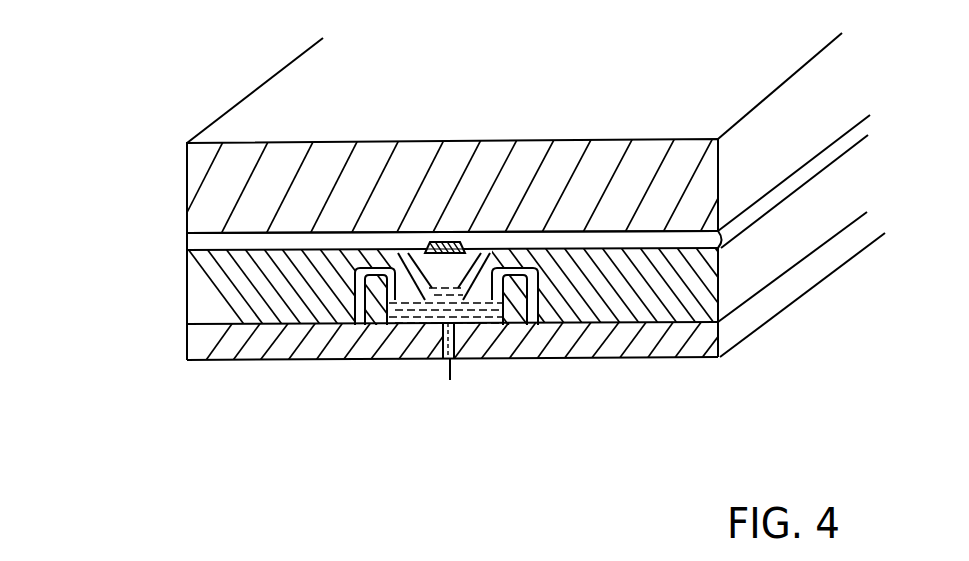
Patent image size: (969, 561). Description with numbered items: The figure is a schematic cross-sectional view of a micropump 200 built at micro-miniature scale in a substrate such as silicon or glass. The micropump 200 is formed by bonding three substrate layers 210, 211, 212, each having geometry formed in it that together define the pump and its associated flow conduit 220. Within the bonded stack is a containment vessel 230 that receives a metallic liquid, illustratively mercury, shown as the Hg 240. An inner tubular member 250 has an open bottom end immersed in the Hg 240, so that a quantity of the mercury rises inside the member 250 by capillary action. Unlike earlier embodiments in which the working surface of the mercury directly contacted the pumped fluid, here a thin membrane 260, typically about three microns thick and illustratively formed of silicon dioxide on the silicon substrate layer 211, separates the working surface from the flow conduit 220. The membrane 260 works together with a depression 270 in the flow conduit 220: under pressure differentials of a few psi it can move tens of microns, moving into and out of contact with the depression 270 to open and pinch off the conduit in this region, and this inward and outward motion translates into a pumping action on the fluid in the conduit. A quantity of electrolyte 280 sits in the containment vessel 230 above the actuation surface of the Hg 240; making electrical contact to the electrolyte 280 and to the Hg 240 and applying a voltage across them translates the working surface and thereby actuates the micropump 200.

The micropump 200 is at (475, 281).
The substrate layer 210 is at (828, 132).
The substrate layer 211 is at (817, 237).
The substrate layer 212 is at (808, 267).
The flow conduit 220 is at (200, 243).
The containment vessel 230 is at (490, 318).
The metallic liquid (Hg) 240 is at (435, 362).
The inner tubular member 250 is at (462, 272).
The membrane 260 is at (426, 252).
The depression 270 is at (430, 242).
The electrolyte 280 is at (398, 300).